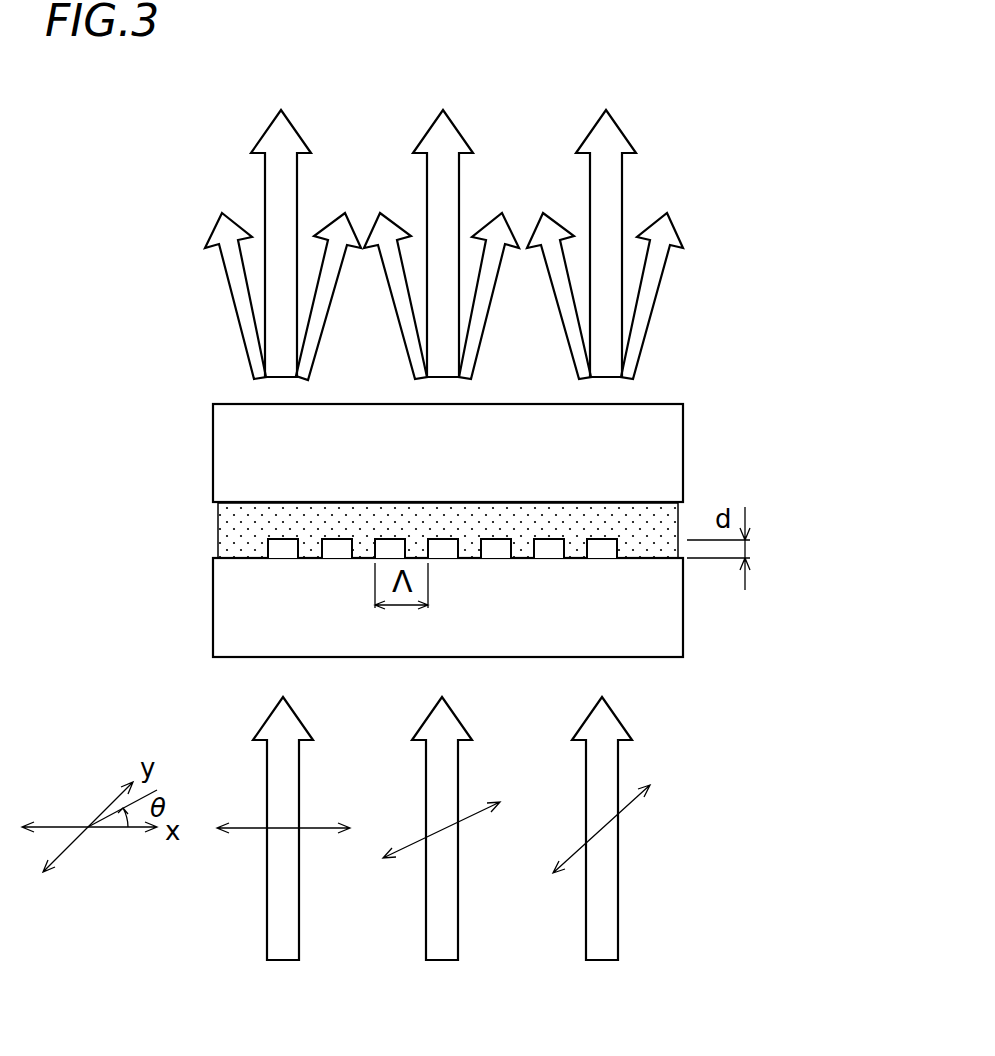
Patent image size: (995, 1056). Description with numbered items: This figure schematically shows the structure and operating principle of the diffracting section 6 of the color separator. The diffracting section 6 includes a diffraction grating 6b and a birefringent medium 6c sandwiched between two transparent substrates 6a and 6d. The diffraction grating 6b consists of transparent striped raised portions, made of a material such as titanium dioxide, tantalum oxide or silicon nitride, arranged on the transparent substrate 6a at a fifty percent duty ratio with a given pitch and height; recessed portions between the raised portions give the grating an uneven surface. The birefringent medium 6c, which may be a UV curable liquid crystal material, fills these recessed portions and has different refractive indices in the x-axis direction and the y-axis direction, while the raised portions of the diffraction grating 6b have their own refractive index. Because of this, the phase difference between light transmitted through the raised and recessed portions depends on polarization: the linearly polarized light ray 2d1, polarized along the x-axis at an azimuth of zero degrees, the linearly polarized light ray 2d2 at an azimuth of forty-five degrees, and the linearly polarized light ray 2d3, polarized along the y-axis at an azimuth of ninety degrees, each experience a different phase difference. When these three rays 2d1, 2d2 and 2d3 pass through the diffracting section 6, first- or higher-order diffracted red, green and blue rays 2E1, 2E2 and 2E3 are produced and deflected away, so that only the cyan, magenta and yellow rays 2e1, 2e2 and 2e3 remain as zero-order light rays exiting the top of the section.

The cyan ray 2e1 is at (275, 130).
The magenta ray 2e2 is at (437, 130).
The yellow ray 2e3 is at (597, 130).
The diffracted red ray 2E1 is at (218, 228).
The diffracted green ray 2E2 is at (402, 303).
The diffracted blue ray 2E3 is at (543, 230).
The linearly polarized light ray 2d1 is at (282, 943).
The linearly polarized light ray 2d2 is at (442, 945).
The linearly polarized light ray 2d3 is at (602, 945).
The diffracting section 6 is at (355, 530).
The transparent substrate 6a is at (228, 624).
The diffraction grating 6b is at (283, 547).
The birefringent medium 6c is at (228, 516).
The transparent substrate 6d is at (228, 462).